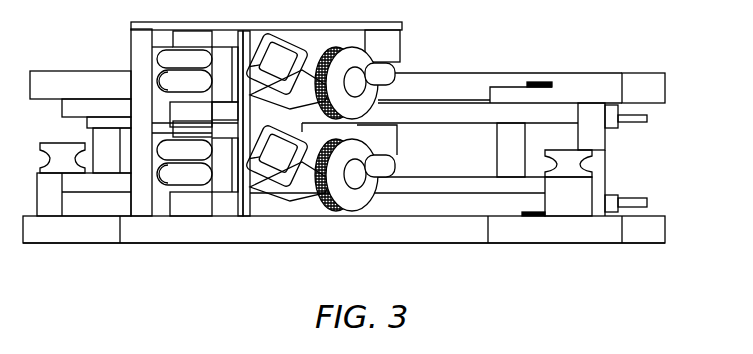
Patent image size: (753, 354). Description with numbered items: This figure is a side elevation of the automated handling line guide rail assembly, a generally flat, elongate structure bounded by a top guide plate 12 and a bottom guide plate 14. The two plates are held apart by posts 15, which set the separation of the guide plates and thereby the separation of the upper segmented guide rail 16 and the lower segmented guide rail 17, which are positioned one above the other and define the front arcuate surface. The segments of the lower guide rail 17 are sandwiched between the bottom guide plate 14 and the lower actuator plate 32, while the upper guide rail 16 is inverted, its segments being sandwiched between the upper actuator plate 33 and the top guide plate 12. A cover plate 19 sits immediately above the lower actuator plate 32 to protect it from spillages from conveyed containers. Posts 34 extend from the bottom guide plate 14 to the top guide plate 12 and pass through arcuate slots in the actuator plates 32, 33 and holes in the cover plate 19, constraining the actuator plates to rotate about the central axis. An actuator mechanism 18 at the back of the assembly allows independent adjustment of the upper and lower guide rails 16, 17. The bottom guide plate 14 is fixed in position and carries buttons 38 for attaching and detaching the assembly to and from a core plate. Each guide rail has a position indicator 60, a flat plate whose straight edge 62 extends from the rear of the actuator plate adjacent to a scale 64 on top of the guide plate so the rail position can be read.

The top guide plate 12 is at (667, 87).
The bottom guide plate 14 is at (667, 228).
The posts 15 is at (98, 142).
The upper segmented guide rail 16 is at (655, 121).
The lower segmented guide rail 17 is at (655, 202).
The actuator mechanism 18 is at (270, 252).
The cover plate 19 is at (428, 182).
The lower actuator plate 32 is at (453, 208).
The upper actuator plate 33 is at (463, 113).
The posts 34 is at (390, 43).
The buttons 38 is at (582, 187).
The position indicator 60 is at (630, 127).
The straight edge 62 is at (647, 202).
The scale 64 is at (648, 73).